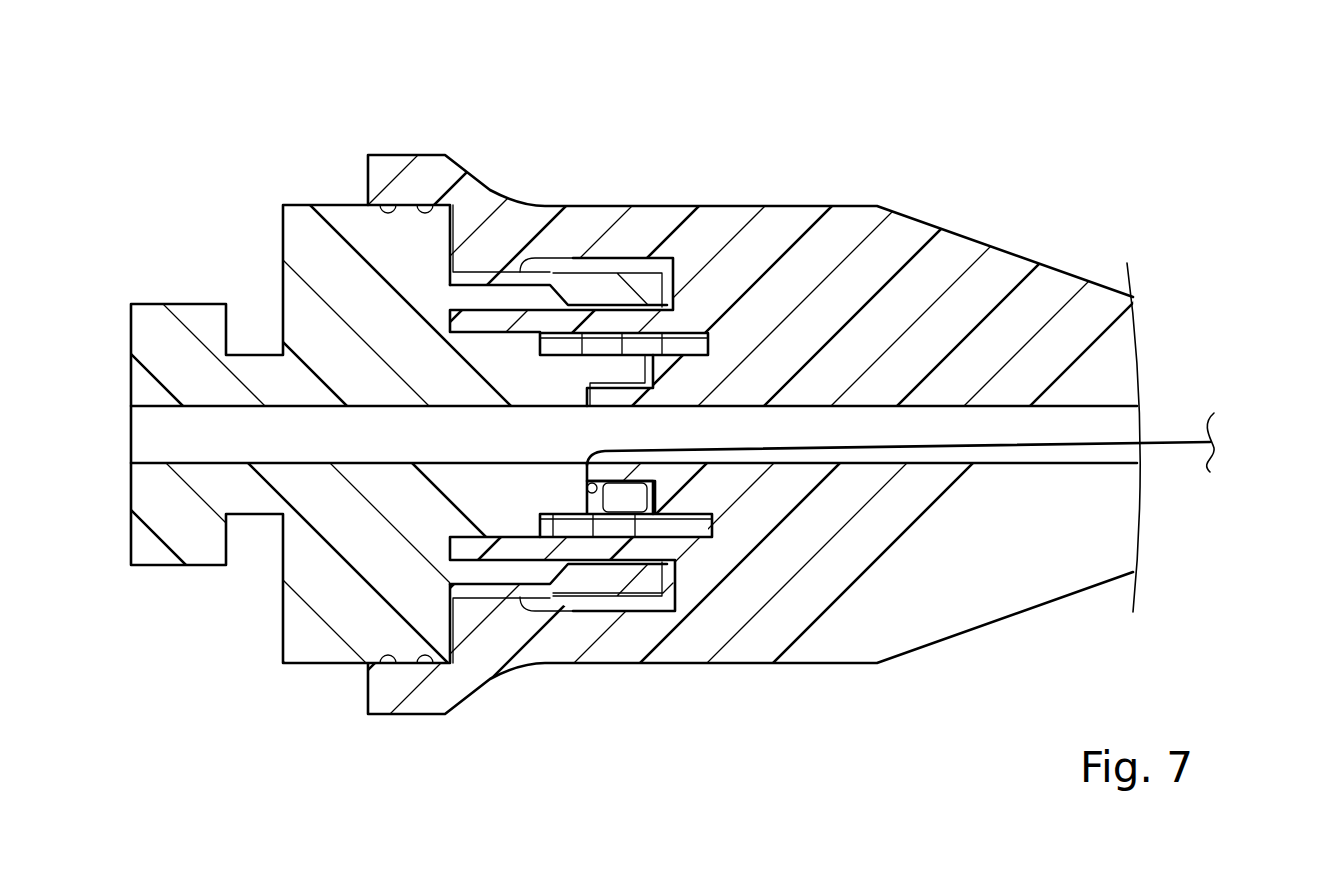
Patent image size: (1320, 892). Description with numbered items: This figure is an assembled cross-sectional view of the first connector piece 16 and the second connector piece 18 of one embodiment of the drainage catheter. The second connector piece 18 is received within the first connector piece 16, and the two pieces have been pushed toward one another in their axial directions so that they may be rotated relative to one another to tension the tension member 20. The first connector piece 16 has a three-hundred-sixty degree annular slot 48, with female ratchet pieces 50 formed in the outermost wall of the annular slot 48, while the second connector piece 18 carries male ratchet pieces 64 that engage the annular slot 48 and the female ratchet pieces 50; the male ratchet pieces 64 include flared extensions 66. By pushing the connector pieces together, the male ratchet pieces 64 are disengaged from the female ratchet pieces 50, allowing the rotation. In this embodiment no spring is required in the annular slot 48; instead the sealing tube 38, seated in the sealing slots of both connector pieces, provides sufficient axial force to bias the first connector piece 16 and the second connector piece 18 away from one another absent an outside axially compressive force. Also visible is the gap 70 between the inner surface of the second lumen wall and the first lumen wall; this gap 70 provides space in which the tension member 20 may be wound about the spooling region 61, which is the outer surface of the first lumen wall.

The first connector piece 16 is at (783, 230).
The second connector piece 18 is at (300, 205).
The tension member 20 is at (1182, 445).
The sealing tube 38 is at (597, 342).
The annular slot 48 is at (672, 282).
The female ratchet pieces 50 is at (540, 262).
The spooling region 61 is at (652, 502).
The male ratchet pieces 64 is at (647, 585).
The flared extensions 66 is at (622, 603).
The gap 70 is at (597, 390).